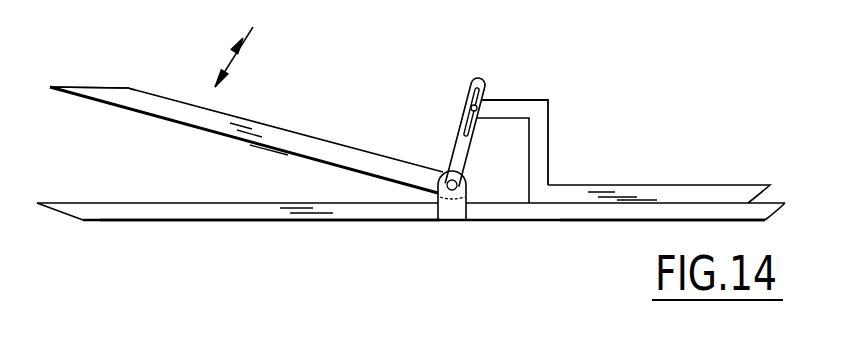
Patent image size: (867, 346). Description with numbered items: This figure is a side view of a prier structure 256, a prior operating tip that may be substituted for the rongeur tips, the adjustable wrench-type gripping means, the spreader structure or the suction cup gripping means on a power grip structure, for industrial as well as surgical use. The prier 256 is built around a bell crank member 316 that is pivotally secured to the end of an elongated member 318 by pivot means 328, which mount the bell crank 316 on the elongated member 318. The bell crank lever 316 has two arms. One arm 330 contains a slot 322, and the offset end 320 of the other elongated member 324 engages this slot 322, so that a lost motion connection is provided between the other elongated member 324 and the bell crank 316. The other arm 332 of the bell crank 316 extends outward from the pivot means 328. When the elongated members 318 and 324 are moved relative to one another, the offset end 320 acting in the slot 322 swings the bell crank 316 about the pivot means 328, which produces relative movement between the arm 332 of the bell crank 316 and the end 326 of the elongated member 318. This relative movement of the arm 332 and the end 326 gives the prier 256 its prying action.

The prier 256 is at (291, 222).
The bell crank member 316 is at (260, 126).
The elongated member 318 is at (660, 220).
The offset end 320 is at (522, 100).
The slot 322 is at (463, 124).
The other elongated member 324 is at (675, 185).
The end of the elongated member 326 is at (117, 222).
The pivot means 328 is at (467, 184).
The arm 330 is at (473, 87).
The arm 332 is at (131, 88).